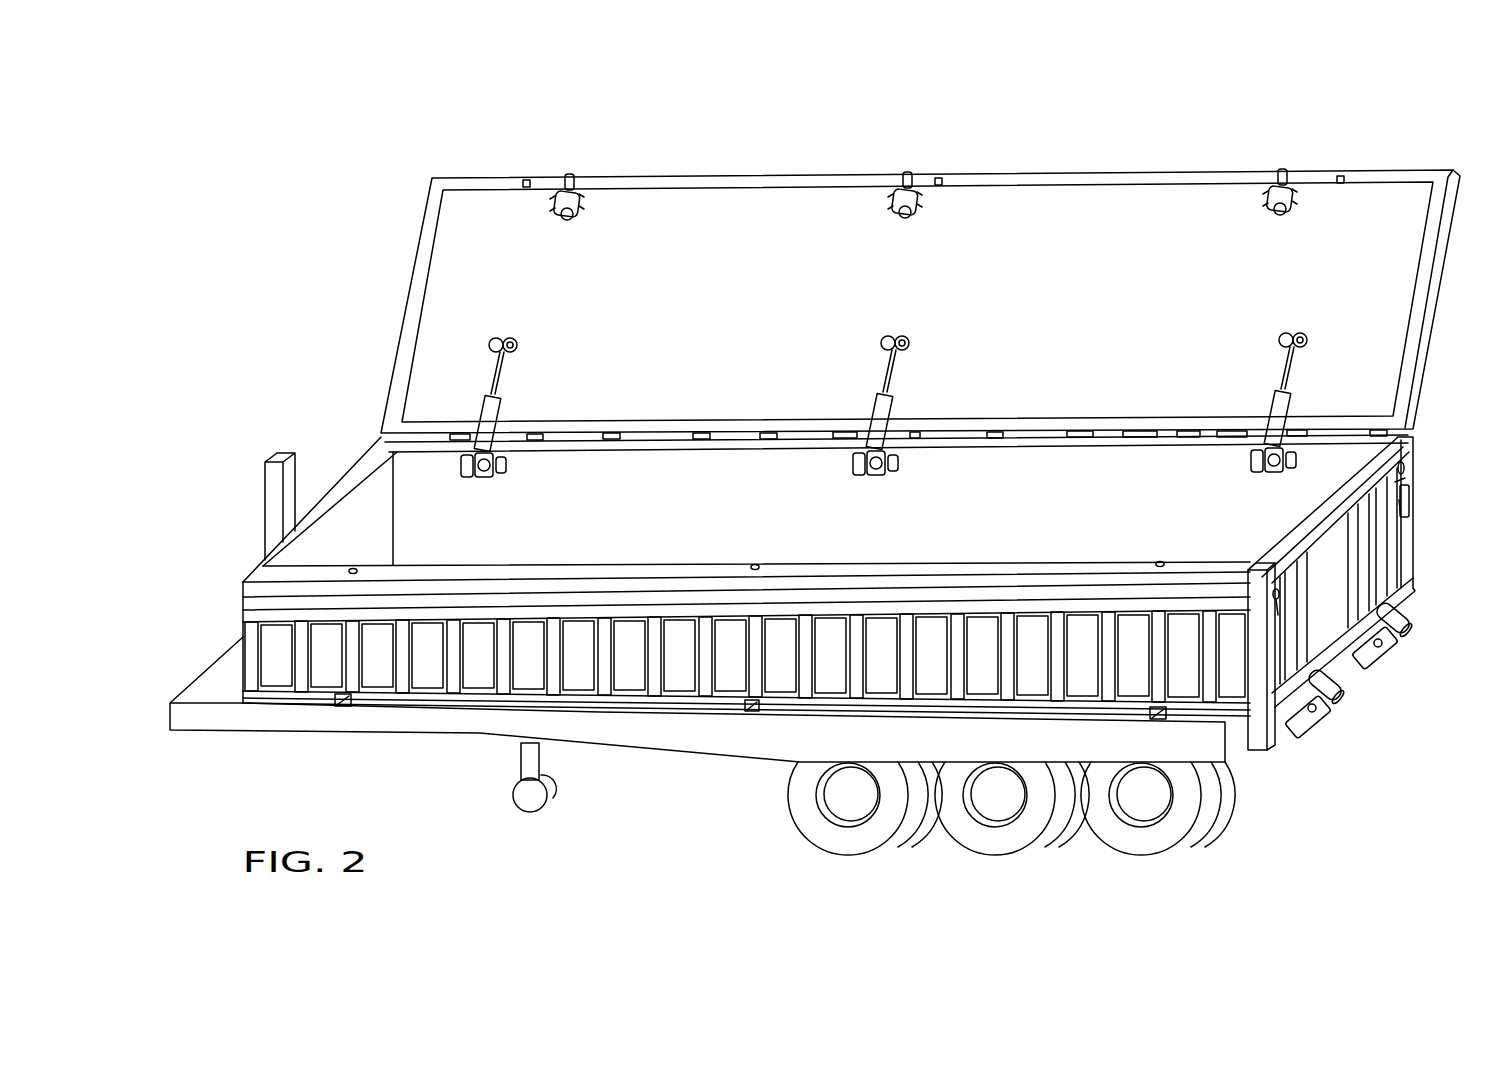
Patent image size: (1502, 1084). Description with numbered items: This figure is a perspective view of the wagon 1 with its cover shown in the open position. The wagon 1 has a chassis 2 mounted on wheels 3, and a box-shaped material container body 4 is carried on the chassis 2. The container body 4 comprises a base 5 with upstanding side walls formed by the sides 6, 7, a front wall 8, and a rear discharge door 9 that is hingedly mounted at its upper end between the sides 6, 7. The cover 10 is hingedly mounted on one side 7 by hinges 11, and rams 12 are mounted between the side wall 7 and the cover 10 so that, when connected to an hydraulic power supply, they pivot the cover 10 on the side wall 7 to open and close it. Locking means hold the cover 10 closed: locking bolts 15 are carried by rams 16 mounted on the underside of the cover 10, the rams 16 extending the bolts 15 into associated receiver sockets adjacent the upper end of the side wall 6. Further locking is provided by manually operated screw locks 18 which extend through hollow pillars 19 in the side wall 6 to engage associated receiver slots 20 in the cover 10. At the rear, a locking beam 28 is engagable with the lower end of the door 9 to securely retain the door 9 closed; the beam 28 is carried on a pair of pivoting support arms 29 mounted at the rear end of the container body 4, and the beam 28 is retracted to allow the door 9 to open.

The wagon 1 is at (618, 800).
The chassis 2 is at (722, 747).
The wheels 3 is at (808, 815).
The material container body 4 is at (253, 547).
The base 5 is at (432, 712).
The side 6 is at (917, 570).
The side 7 is at (1043, 465).
The front wall 8 is at (343, 517).
The rear discharge door 9 is at (1330, 617).
The cover 10 is at (1122, 212).
The hinges 11 is at (553, 435).
The rams 12 is at (505, 395).
The locking bolts 15 is at (580, 178).
The rams 16 is at (562, 218).
The screw locks 18 is at (760, 563).
The hollow pillars 19 is at (367, 647).
The receiver slots 20 is at (535, 178).
The locking beam 28 is at (1287, 732).
The pivoting support arms 29 is at (1318, 728).